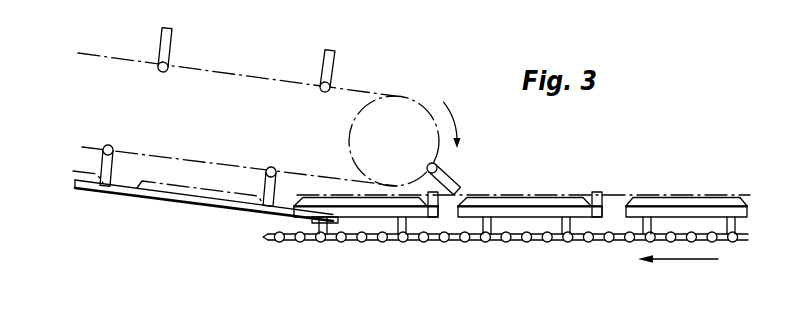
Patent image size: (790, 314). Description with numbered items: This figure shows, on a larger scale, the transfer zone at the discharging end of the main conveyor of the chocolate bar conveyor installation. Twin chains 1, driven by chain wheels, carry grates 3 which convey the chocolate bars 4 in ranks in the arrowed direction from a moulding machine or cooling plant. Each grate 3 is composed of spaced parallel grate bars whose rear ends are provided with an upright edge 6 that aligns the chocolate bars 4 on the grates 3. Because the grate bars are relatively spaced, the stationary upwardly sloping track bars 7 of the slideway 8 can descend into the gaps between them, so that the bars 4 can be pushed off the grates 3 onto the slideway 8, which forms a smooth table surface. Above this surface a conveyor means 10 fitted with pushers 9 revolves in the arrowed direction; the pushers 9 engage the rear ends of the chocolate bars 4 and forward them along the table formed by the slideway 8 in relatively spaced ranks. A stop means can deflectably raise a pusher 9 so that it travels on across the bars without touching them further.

The twin chains 1 is at (383, 241).
The grates 3 is at (530, 212).
The chocolate bars 4 is at (218, 199).
The upright edge 6 is at (597, 195).
The track bars 7 is at (330, 219).
The slideway 8 is at (76, 190).
The pushers 9 is at (172, 44).
The conveyor means 10 is at (182, 160).